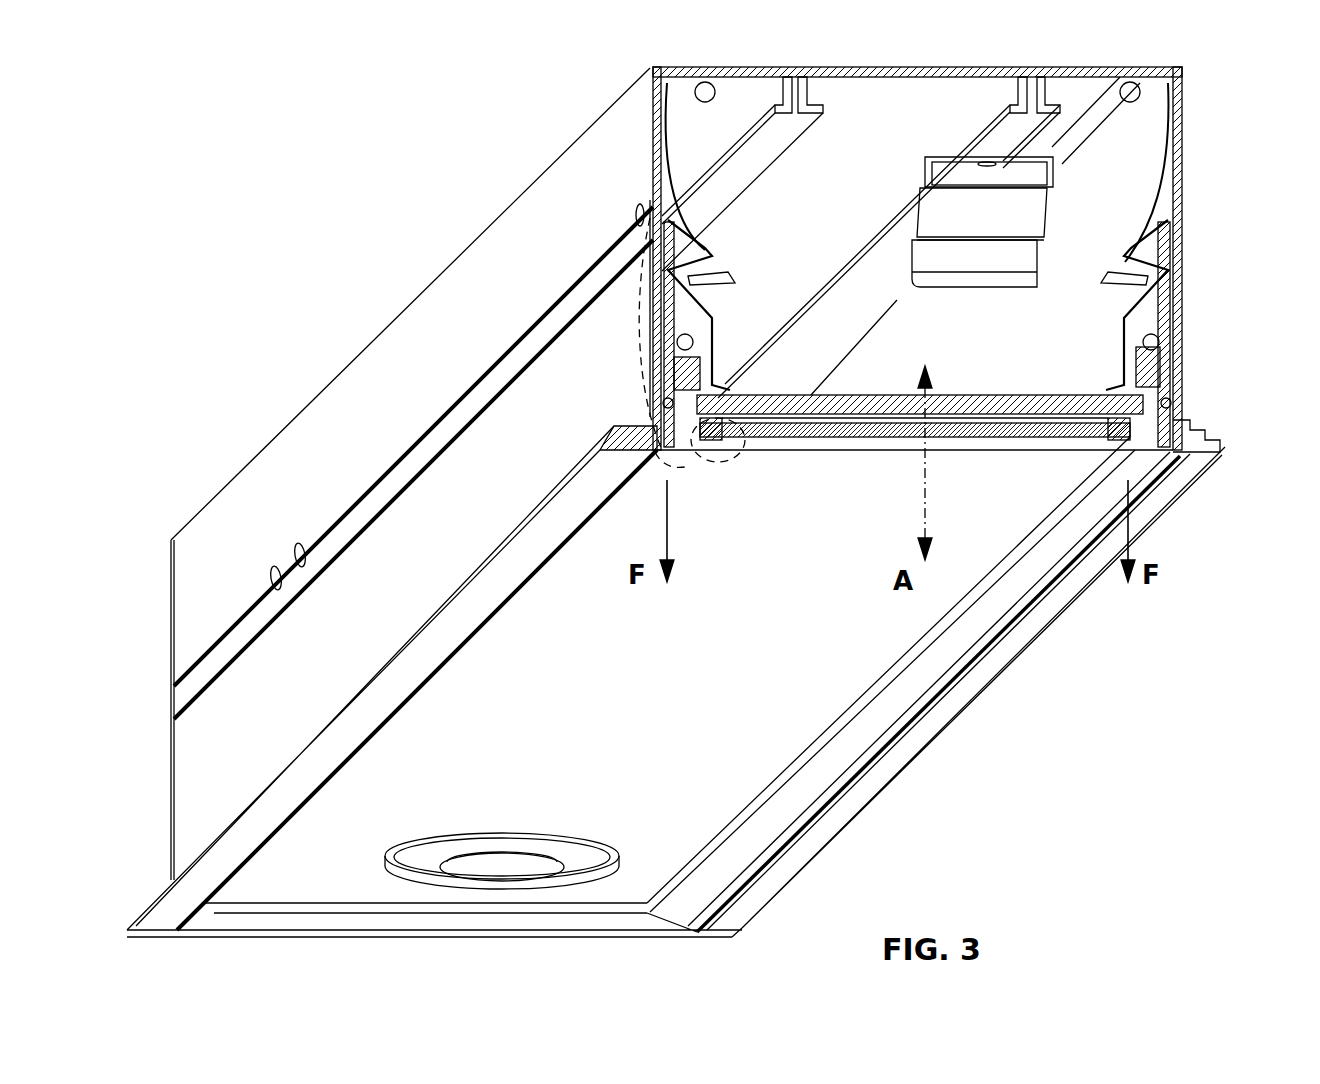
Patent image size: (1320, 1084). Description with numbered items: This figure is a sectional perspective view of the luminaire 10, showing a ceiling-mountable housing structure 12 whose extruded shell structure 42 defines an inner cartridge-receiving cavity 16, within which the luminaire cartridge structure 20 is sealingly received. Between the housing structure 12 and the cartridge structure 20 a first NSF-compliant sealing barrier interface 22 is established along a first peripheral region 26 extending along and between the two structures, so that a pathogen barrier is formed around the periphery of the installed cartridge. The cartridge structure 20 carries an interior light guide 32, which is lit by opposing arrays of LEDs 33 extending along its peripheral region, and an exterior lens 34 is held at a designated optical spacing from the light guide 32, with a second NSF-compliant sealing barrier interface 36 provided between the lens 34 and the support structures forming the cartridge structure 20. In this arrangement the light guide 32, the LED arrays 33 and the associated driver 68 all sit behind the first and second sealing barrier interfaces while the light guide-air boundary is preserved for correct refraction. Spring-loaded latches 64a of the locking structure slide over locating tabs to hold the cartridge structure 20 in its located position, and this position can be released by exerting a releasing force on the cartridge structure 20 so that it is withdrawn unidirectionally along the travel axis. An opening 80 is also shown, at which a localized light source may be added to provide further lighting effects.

The luminaire 10 is at (357, 232).
The housing structure 12 is at (380, 389).
The cartridge-receiving cavity 16 is at (1085, 220).
The cartridge structure 20 is at (1000, 600).
The first NSF-compliant sealing barrier interface 22 is at (636, 397).
The first peripheral region 26 is at (660, 474).
The light guide 32 is at (1032, 391).
The LED arrays 33 is at (1148, 417).
The exterior lens 34 is at (866, 462).
The second NSF-compliant sealing barrier interface 36 is at (700, 462).
The shell structure 42 is at (598, 178).
The spring-loaded latches 64a is at (715, 257).
The driver 68 is at (900, 176).
The opening 80 is at (358, 880).